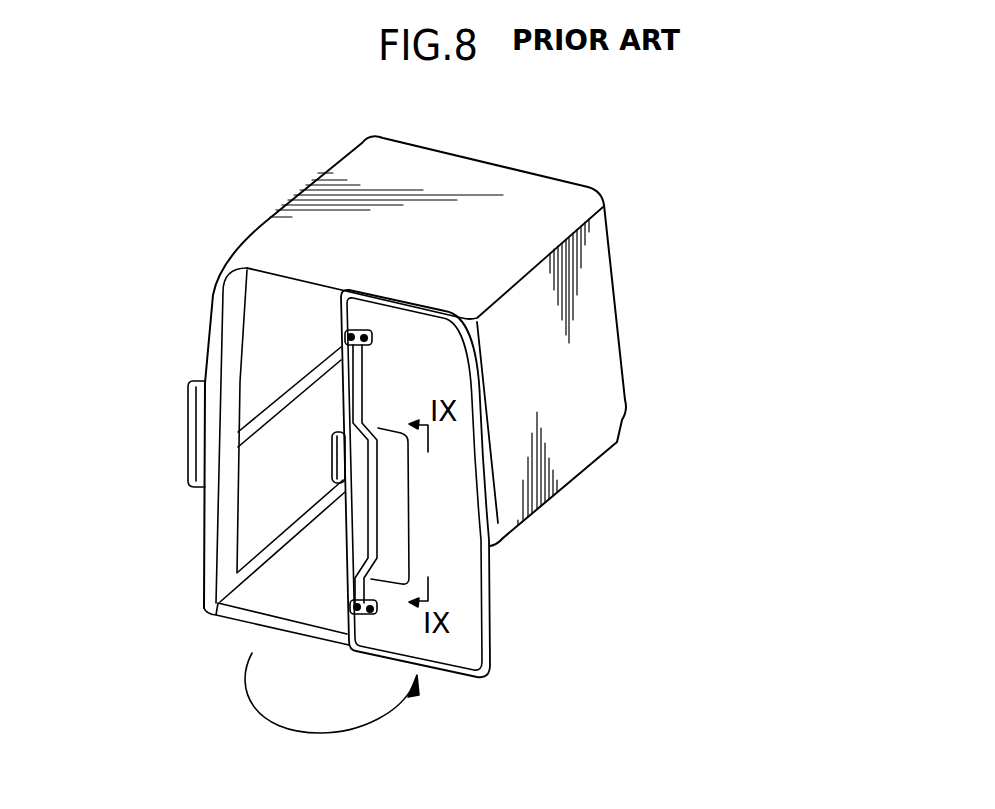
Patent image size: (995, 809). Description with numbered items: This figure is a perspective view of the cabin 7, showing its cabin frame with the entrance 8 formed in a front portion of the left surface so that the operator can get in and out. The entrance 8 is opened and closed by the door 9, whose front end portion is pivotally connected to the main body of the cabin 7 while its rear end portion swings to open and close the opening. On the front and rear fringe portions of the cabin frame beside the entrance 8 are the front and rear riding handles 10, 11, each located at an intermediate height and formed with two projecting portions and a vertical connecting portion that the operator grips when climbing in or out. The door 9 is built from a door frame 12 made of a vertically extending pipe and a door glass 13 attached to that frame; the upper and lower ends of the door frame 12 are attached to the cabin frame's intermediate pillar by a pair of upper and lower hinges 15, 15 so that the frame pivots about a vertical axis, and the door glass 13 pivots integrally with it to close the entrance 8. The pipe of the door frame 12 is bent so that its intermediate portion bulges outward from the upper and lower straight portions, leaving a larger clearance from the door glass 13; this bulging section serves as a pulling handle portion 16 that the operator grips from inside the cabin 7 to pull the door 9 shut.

The cabin 7 is at (613, 268).
The entrance 8 is at (262, 312).
The door 9 is at (448, 483).
The front riding handle 10 is at (187, 416).
The rear riding handle 11 is at (332, 441).
The door frame 12 is at (364, 388).
The door glass 13 is at (473, 617).
The hinge 15 is at (371, 334).
The pulling handle portion 16 is at (411, 434).